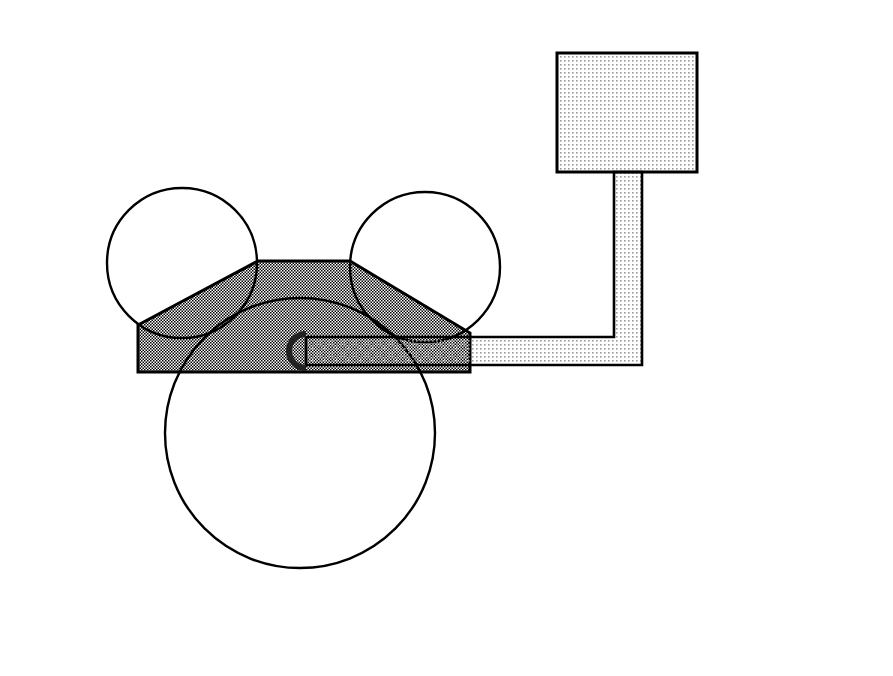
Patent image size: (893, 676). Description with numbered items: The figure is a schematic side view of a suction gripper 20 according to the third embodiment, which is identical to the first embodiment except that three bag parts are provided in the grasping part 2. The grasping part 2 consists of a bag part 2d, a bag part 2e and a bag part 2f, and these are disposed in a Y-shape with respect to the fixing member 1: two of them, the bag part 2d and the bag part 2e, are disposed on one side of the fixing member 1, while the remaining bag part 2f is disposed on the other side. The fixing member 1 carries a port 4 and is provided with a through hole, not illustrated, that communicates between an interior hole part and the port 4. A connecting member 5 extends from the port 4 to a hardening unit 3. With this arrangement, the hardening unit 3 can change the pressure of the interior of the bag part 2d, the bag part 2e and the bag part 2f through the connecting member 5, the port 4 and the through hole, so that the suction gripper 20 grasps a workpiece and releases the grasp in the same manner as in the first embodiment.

The suction gripper 20 is at (98, 133).
The grasping part 2 is at (139, 428).
The bag part 2d is at (183, 189).
The bag part 2e is at (440, 191).
The bag part 2f is at (418, 495).
The fixing member 1 is at (458, 374).
The port 4 is at (302, 331).
The connecting member 5 is at (642, 266).
The hardening unit 3 is at (697, 138).